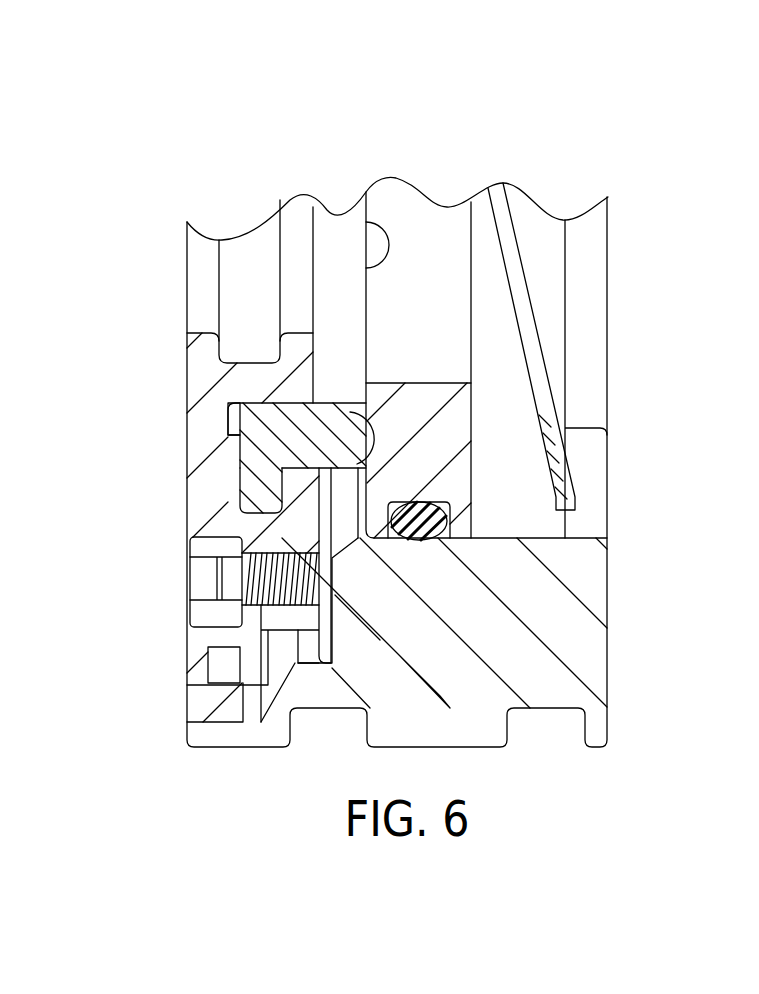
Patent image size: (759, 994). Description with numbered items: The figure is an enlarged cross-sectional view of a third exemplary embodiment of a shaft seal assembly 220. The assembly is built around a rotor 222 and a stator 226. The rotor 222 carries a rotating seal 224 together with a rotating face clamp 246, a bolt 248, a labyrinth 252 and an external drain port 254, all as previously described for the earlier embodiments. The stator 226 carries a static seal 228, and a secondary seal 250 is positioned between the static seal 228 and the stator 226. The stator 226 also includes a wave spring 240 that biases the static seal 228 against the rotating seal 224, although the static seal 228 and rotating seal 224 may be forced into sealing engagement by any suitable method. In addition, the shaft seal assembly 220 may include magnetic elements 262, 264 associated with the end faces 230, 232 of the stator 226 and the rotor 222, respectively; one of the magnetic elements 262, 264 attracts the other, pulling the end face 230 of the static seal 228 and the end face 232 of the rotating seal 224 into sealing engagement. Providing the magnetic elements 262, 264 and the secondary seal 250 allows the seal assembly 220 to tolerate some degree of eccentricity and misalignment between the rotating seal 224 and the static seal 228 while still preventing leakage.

The shaft seal assembly 220 is at (582, 138).
The rotor 222 is at (196, 350).
The rotating seal 224 is at (247, 455).
The stator 226 is at (600, 650).
The static seal 228 is at (448, 440).
The end face 230 is at (395, 387).
The end face 232 is at (350, 415).
The wave spring 240 is at (533, 316).
The rotating face clamp 246 is at (283, 519).
The bolt 248 is at (196, 600).
The secondary seal 250 is at (450, 515).
The labyrinth 252 is at (228, 662).
The external drain port 254 is at (227, 712).
The magnetic element 262 is at (380, 243).
The magnetic element 264 is at (300, 455).